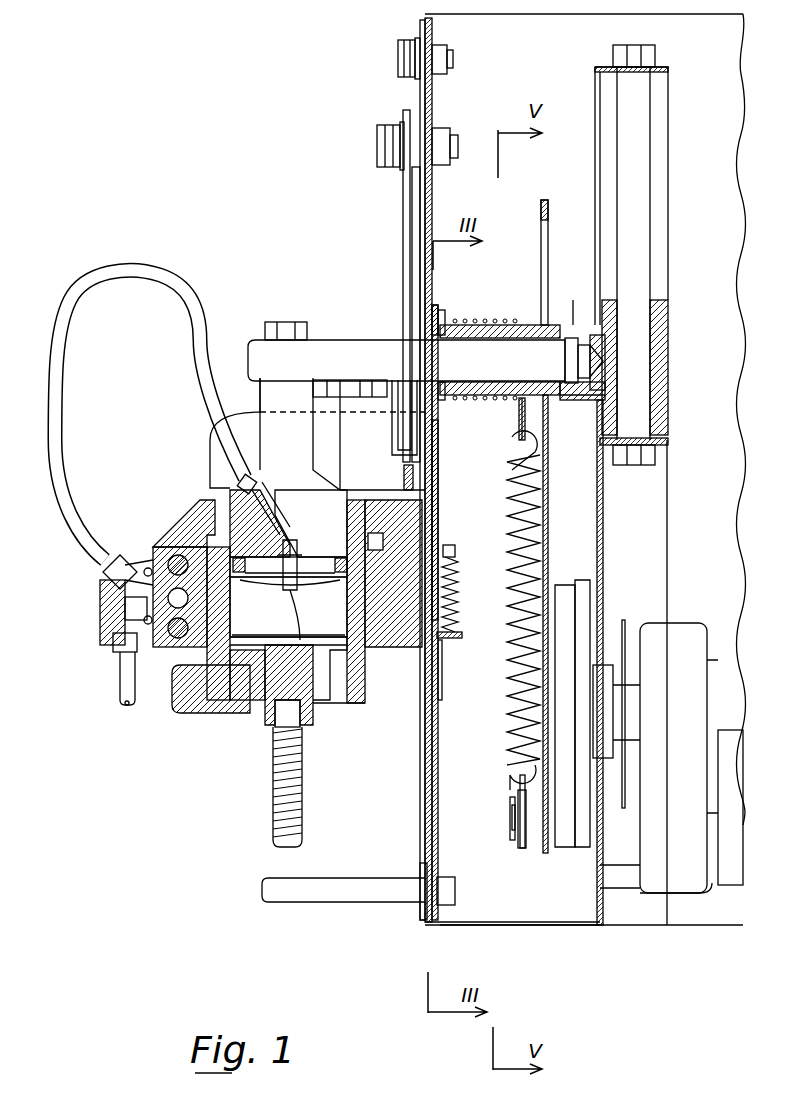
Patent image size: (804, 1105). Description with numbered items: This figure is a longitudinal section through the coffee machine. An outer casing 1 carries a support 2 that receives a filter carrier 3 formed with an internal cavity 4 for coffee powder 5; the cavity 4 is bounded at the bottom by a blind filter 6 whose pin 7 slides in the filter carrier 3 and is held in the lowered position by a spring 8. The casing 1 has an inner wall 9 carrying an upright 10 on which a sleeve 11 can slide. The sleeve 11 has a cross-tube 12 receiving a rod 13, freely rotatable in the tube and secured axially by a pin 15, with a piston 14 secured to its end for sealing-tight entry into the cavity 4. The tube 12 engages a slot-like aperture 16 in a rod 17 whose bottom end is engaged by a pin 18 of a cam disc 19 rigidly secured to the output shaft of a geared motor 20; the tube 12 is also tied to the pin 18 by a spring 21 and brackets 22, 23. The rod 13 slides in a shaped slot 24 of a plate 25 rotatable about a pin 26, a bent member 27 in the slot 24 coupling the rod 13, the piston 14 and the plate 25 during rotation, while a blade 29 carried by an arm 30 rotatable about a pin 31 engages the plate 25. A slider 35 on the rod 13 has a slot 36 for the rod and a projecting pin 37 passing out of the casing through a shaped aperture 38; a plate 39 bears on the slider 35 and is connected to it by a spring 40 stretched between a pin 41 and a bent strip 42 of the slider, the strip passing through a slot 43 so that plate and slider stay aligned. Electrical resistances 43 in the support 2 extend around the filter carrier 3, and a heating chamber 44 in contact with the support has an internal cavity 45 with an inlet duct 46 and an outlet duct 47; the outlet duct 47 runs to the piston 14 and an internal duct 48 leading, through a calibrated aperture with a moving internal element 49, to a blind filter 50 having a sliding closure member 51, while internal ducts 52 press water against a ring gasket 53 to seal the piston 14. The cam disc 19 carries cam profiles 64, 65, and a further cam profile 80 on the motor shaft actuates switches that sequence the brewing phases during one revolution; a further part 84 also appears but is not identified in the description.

The casing 1 is at (482, 922).
The support 2 is at (400, 620).
The filter carrier 3 is at (356, 672).
The internal cavity 4 is at (368, 655).
The coffee powder 5 is at (288, 601).
The blind filter 6 is at (268, 700).
The pin 7 is at (273, 715).
The spring 8 is at (275, 780).
The inner wall 9 is at (650, 543).
The upright 10 is at (635, 240).
The sleeve 11 is at (659, 362).
The cross-tube 12 is at (496, 323).
The rod 13 is at (363, 356).
The piston 14 is at (335, 515).
The pin 15 is at (572, 298).
The slot-like aperture 16 is at (541, 260).
The rod 17 is at (548, 490).
The pin 18 is at (512, 830).
The cam disc 19 is at (520, 903).
The geared motor 20 is at (682, 718).
The spring 21 is at (510, 725).
The bracket 22 is at (520, 795).
The bracket 23 is at (518, 420).
The shaped slot 24 is at (410, 262).
The plate 25 is at (390, 209).
The pin 26 is at (377, 145).
The bent member 27 is at (395, 445).
The blade 29 is at (239, 415).
The arm 30 is at (429, 236).
The pin 31 is at (398, 60).
The slider 35 is at (438, 755).
The slot 36 is at (438, 310).
The projecting pin 37 is at (358, 912).
The shaped aperture 38 is at (426, 790).
The plate 39 is at (440, 512).
The spring 40 is at (458, 601).
The pin 41 is at (450, 545).
The bent strip 42 is at (460, 640).
The electrical resistances 43 is at (163, 538).
The heating chamber 44 is at (100, 620).
The internal cavity 45 is at (107, 590).
The inlet duct 46 is at (120, 690).
The outlet duct 47 is at (65, 375).
The internal duct 48 is at (260, 493).
The moving internal element 49 is at (345, 520).
The blind filter 50 is at (205, 655).
The sliding closure member 51 is at (310, 655).
The internal ducts 52 is at (270, 508).
The ring gasket 53 is at (205, 512).
The cam profile 64 is at (562, 585).
The cam profile 65 is at (581, 580).
The cam profile 80 is at (625, 618).
The lever 84 is at (192, 702).